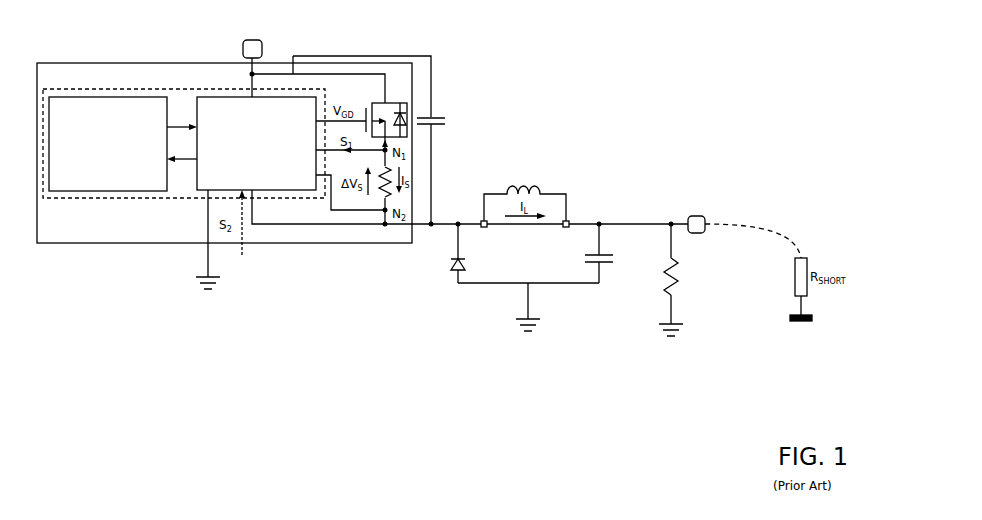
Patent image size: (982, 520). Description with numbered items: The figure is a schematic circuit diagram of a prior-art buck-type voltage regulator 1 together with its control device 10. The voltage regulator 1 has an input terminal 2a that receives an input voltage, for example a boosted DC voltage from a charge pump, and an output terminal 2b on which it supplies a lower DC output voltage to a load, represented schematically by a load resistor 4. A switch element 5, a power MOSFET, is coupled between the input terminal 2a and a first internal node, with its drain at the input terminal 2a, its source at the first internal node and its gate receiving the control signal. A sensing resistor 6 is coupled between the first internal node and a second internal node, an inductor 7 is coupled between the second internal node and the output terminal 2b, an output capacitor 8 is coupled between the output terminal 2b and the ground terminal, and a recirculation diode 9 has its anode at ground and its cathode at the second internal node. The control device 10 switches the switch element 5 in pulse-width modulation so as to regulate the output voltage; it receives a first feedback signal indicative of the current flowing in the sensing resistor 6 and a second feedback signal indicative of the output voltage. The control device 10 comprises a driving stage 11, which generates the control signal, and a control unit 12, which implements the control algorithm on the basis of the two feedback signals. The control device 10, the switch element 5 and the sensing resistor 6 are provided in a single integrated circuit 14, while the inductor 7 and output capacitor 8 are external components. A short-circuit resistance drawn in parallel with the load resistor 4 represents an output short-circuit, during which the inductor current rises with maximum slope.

The voltage regulator 1 is at (724, 92).
The input terminal 2a is at (243, 47).
The output terminal 2b is at (699, 233).
The load resistor 4 is at (676, 272).
The switch element 5 is at (392, 103).
The sensing resistor 6 is at (379, 172).
The inductor 7 is at (522, 184).
The output capacitor 8 is at (604, 255).
The recirculation diode 9 is at (450, 263).
The control device 10 is at (128, 201).
The driving stage 11 is at (222, 99).
The control unit 12 is at (66, 97).
The integrated circuit 14 is at (58, 243).